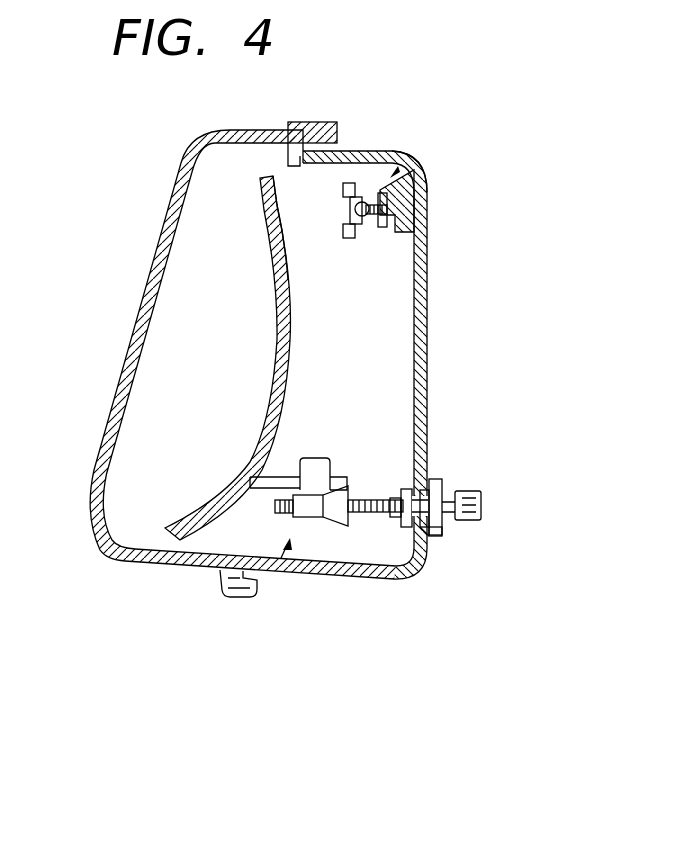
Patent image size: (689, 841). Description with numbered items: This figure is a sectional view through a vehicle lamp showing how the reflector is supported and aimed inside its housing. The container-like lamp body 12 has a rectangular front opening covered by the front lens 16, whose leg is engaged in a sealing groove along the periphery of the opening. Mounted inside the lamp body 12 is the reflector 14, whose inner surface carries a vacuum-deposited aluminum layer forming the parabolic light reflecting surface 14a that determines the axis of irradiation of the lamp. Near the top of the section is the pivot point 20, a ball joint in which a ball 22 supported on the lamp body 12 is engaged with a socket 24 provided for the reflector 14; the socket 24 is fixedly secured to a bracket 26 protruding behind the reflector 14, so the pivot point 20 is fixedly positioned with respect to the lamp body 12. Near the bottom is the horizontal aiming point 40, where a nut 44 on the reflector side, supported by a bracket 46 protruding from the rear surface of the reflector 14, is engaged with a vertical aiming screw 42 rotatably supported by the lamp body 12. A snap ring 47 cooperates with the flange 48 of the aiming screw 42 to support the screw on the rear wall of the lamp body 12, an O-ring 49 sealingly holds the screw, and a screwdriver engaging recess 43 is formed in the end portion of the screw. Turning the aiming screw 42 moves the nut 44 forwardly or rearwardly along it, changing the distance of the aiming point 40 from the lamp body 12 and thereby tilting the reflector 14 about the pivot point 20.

The lamp body 12 is at (428, 366).
The reflector 14 is at (290, 360).
The parabolic light reflecting surface 14a is at (268, 250).
The front lens 16 is at (110, 398).
The pivot point 20 is at (417, 160).
The ball 22 is at (368, 226).
The socket 24 is at (390, 168).
The bracket 26 is at (352, 185).
The horizontal aiming point 40 is at (280, 574).
The vertical aiming screw 42 is at (378, 515).
The nut 44 is at (342, 522).
The bracket 46 is at (258, 492).
The snap ring 47 is at (410, 545).
The flange 48 is at (437, 540).
The O-ring 49 is at (432, 480).
The screwdriver engaging recess 43 is at (484, 506).